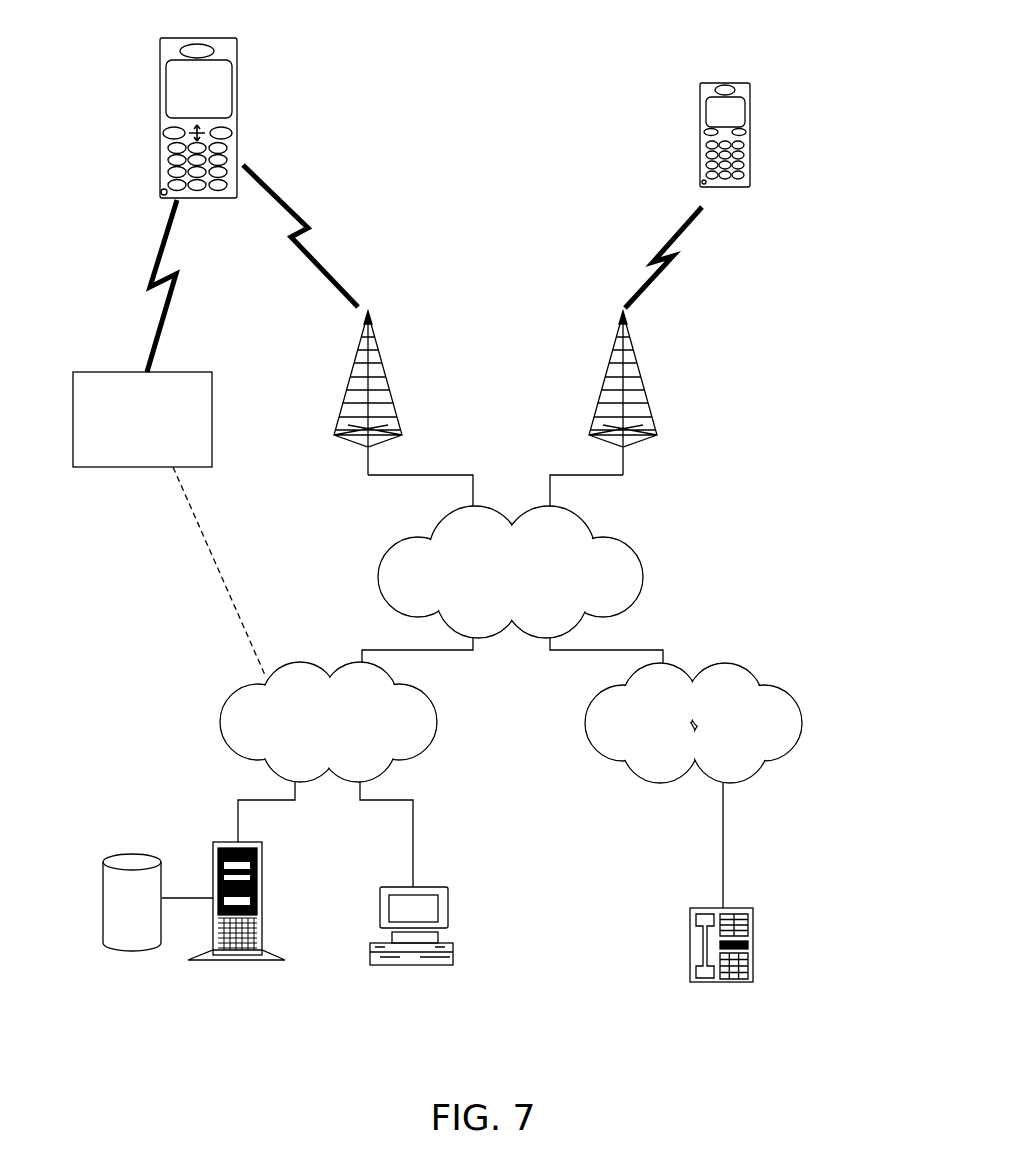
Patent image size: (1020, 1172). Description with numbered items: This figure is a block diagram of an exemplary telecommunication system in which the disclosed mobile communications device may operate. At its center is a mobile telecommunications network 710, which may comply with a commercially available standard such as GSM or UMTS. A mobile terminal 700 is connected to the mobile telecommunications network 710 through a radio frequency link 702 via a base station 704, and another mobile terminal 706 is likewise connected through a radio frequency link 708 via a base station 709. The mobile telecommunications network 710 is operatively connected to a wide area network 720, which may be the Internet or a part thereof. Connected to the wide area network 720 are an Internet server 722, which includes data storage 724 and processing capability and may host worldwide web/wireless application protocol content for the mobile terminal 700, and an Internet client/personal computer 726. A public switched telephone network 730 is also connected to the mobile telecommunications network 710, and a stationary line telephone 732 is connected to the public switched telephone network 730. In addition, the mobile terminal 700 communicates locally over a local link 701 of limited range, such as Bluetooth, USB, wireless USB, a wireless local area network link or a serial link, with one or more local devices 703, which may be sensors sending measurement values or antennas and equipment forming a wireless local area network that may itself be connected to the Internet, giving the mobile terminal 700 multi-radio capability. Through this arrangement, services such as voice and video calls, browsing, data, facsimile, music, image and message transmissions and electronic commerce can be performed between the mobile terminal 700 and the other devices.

The mobile terminal 700 is at (154, 133).
The local link 701 is at (145, 283).
The radio frequency link 702 is at (305, 222).
The local device 703 is at (107, 467).
The base station 704 is at (368, 380).
The mobile terminal 706 is at (715, 83).
The radio frequency link 708 is at (647, 250).
The base station 709 is at (610, 358).
The mobile telecommunications network 710 is at (378, 567).
The wide area network 720 is at (232, 697).
The Internet server 722 is at (212, 873).
The data storage 724 is at (128, 862).
The Internet client/personal computer 726 is at (436, 887).
The public switched telephone network 730 is at (803, 720).
The line telephone 732 is at (692, 925).